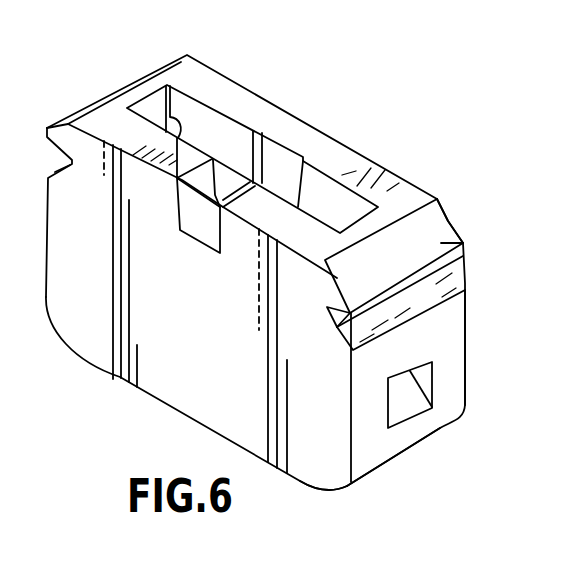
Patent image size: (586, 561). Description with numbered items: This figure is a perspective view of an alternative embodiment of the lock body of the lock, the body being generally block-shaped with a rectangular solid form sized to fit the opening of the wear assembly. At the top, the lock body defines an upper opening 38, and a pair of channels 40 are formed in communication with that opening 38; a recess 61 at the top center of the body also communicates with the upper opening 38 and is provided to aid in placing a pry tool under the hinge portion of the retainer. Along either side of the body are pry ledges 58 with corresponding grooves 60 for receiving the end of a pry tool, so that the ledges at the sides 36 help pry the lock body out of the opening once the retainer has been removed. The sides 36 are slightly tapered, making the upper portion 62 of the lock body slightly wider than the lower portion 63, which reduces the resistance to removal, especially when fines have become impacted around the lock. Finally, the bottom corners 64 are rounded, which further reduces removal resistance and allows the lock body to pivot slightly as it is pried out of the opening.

The upper opening 38 is at (217, 128).
The recess 61 is at (210, 235).
The pry ledges 58 is at (444, 242).
The grooves 60 is at (457, 283).
The upper portion 62 is at (445, 325).
The sides 36 is at (455, 373).
The channels 40 is at (404, 408).
The lower portion 63 is at (368, 450).
The bottom corners 64 is at (348, 485).